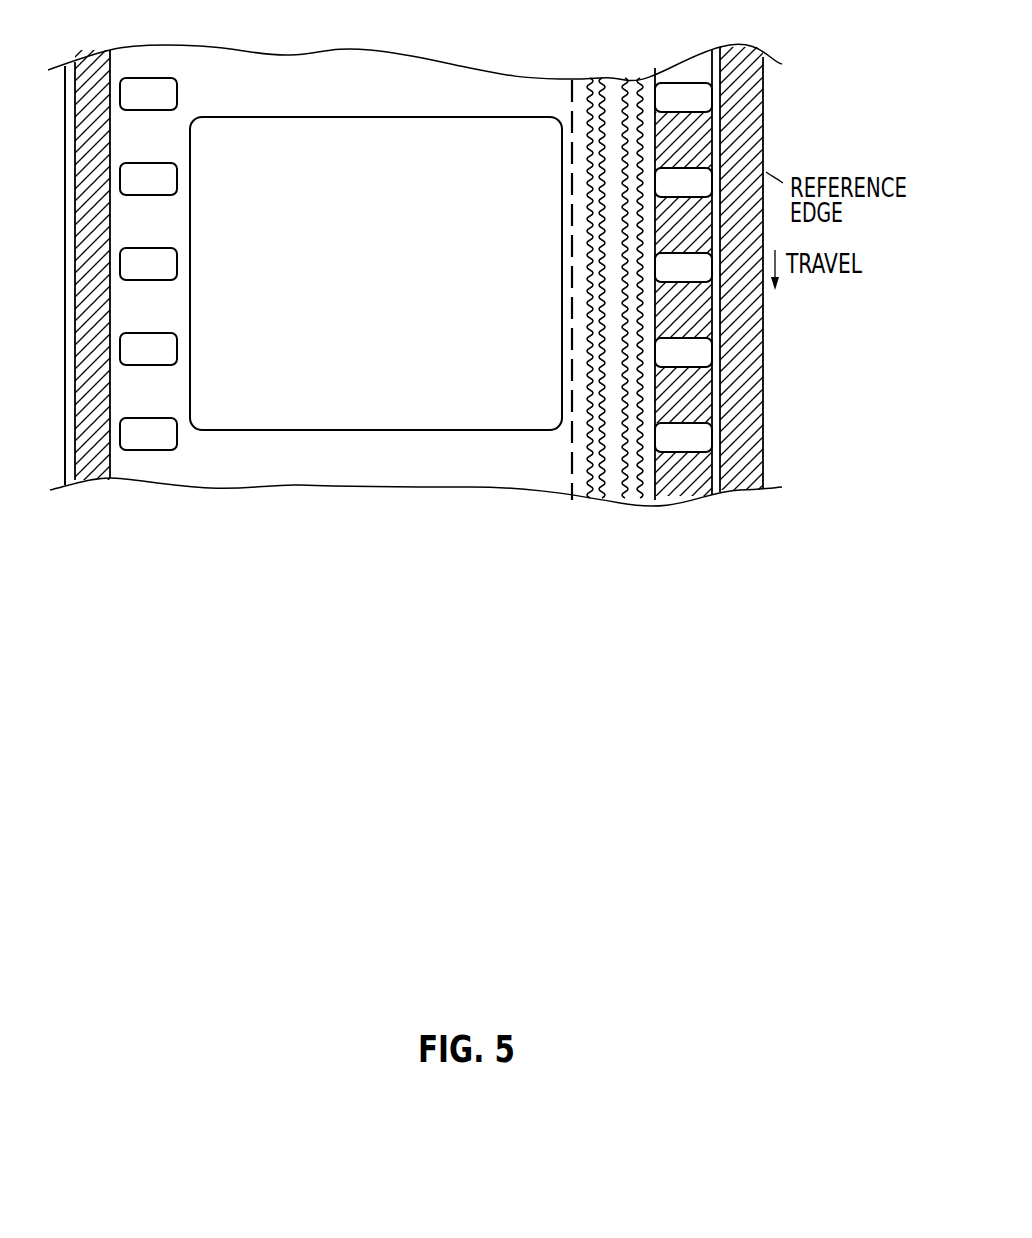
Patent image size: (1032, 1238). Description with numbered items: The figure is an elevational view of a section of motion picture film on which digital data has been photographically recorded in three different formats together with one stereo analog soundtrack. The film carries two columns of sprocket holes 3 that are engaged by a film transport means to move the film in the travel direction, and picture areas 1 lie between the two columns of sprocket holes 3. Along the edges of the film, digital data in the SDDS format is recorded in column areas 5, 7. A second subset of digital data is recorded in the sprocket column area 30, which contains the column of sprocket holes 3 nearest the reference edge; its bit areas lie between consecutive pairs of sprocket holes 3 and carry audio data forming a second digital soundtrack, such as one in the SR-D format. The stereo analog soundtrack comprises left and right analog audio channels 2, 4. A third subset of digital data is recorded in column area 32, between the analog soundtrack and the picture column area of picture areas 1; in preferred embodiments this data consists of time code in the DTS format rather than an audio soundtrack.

The picture areas 1 is at (389, 342).
The left channel 2 is at (592, 497).
The sprocket holes 3 is at (150, 92).
The right channel 4 is at (630, 500).
The column area 5 is at (93, 468).
The column area 7 is at (750, 488).
The sprocket column area 30 is at (692, 130).
The column area 32 is at (570, 107).